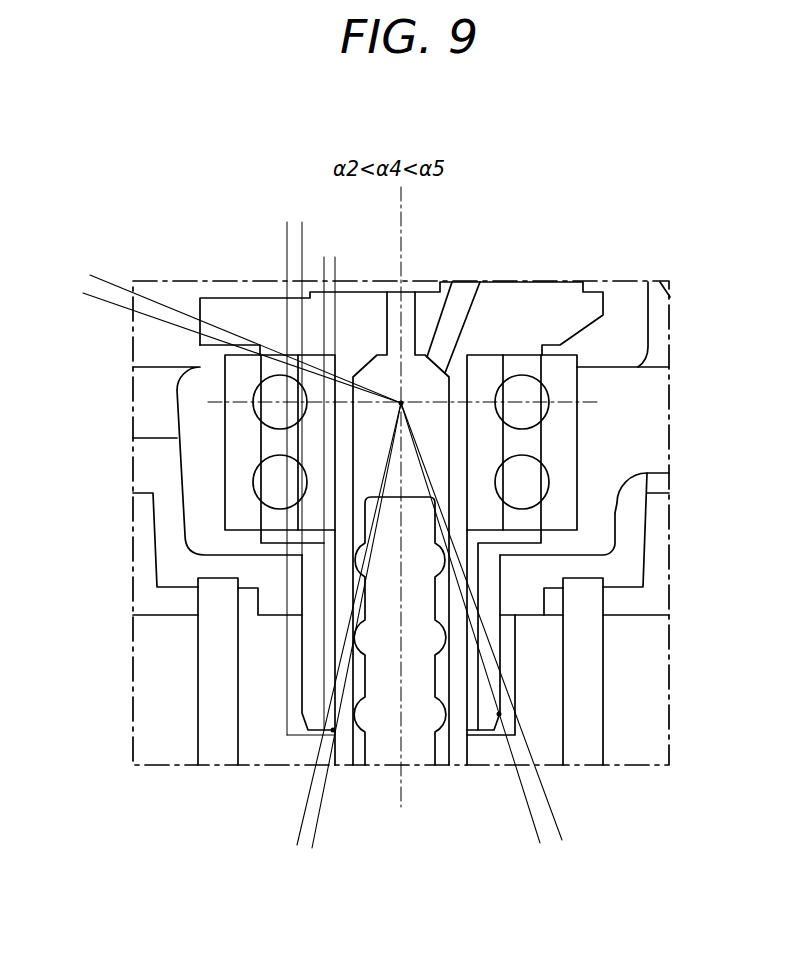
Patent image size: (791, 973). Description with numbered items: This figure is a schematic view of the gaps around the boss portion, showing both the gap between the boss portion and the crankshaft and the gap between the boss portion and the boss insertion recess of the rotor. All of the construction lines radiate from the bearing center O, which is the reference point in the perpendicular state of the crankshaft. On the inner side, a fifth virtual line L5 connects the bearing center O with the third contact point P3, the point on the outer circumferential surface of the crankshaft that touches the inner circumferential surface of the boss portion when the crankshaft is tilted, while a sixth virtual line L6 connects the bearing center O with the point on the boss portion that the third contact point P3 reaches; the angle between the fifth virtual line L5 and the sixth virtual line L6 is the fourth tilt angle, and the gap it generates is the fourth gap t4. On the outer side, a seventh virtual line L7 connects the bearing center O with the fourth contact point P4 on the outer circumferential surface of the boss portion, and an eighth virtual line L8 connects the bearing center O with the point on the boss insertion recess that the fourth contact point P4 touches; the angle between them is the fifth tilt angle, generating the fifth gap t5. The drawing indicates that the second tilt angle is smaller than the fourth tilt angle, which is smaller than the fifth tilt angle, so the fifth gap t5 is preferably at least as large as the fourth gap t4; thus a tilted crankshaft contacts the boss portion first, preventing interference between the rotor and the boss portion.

The bearing center O is at (406, 392).
The fourth gap t4 is at (370, 267).
The fifth gap t5 is at (335, 231).
The fifth virtual line L5 is at (320, 805).
The sixth virtual line L6 is at (310, 800).
The seventh virtual line L7 is at (530, 807).
The eighth virtual line L8 is at (548, 801).
The third contact point P3 is at (333, 730).
The fourth contact point P4 is at (499, 714).